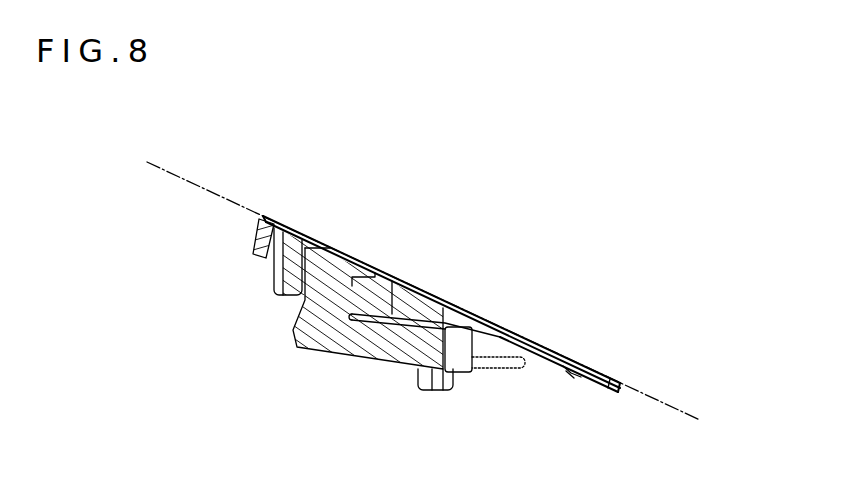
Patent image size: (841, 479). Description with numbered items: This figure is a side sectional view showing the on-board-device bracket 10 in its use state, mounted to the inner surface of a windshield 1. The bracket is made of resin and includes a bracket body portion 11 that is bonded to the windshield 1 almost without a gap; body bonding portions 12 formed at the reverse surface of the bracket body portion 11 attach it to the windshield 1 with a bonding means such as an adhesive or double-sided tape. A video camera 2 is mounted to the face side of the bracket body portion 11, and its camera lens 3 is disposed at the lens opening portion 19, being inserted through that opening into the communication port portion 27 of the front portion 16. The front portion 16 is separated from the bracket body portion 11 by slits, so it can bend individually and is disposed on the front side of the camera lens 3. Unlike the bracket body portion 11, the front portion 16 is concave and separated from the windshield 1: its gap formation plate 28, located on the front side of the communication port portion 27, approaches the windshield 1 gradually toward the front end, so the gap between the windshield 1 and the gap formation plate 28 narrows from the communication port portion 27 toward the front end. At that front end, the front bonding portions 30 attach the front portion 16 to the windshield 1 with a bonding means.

The windshield 1 is at (668, 405).
The video camera 2 is at (342, 305).
The camera lens 3 is at (370, 281).
The on-board-device bracket 10 is at (513, 218).
The bracket body portion 11 is at (455, 304).
The body bonding portions 12 is at (275, 220).
The front portion 16 is at (620, 388).
The lens opening portion 19 is at (348, 256).
The communication port portion 27 is at (402, 285).
The gap formation plate 28 is at (509, 341).
The front bonding portions 30 is at (586, 366).